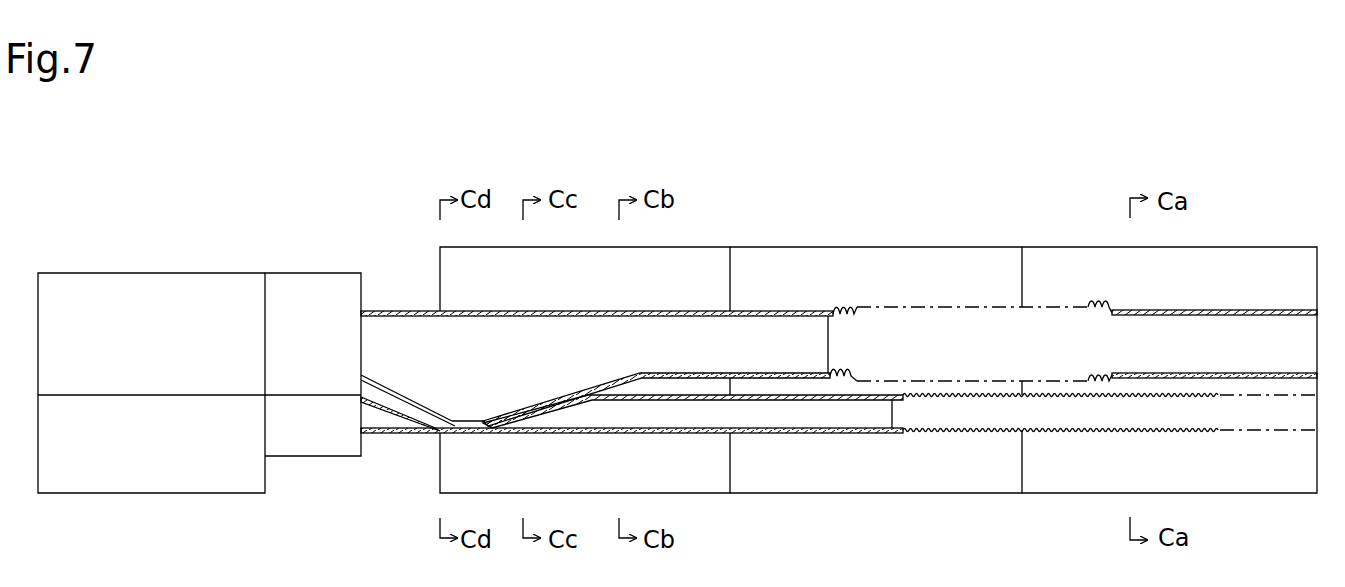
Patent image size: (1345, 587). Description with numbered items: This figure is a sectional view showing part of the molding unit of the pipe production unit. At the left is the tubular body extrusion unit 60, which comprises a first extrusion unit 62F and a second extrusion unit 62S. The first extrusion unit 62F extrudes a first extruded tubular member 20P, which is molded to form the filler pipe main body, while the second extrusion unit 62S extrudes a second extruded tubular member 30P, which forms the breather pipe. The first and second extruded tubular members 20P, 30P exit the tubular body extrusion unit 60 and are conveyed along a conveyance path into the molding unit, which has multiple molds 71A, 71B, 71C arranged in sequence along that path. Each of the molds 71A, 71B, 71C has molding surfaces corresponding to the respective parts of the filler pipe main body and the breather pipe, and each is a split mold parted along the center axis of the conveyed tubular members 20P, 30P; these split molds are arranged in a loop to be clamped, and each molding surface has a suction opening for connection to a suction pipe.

The tubular body extrusion unit 60 is at (213, 273).
The first extrusion unit 62F is at (124, 273).
The second extrusion unit 62S is at (146, 487).
The first extruded tubular member 20P is at (408, 309).
The second extruded tubular member 30P is at (405, 434).
The mold 71A is at (1248, 246).
The mold 71B is at (952, 247).
The mold 71C is at (685, 247).